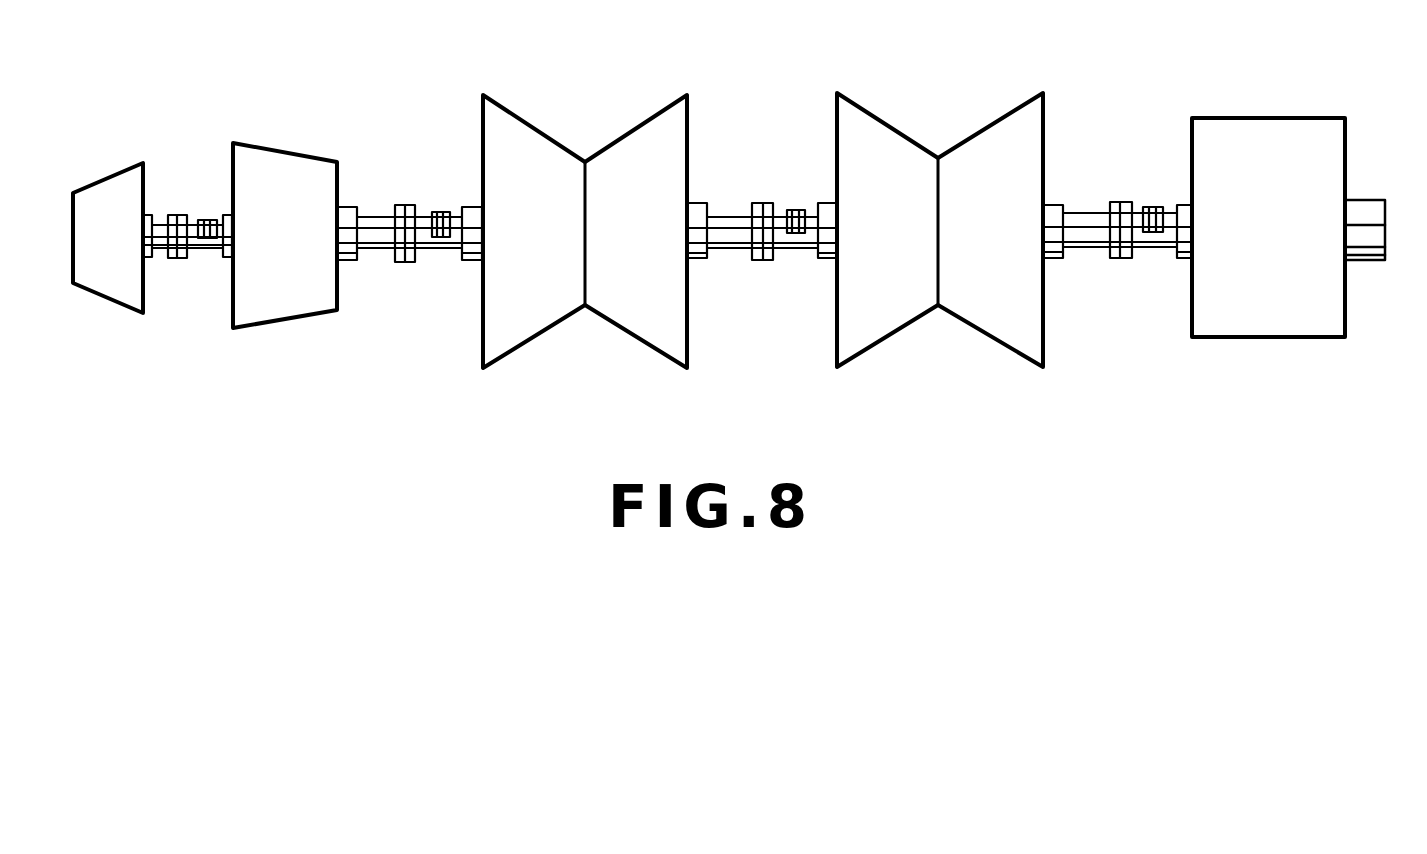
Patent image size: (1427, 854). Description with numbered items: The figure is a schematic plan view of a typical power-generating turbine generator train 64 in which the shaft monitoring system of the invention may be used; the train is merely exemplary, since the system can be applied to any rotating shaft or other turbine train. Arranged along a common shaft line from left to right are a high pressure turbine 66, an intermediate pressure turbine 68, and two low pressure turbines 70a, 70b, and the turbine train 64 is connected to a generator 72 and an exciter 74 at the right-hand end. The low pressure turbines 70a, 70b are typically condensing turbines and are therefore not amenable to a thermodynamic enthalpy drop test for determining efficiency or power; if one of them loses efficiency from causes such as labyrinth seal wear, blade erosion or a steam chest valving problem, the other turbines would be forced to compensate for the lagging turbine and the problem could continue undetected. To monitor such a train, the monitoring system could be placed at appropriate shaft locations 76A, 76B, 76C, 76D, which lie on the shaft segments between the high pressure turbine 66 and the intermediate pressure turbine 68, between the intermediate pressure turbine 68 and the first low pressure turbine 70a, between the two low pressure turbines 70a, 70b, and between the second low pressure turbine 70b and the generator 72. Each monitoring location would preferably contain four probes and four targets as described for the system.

The turbine generator train 64 is at (397, 100).
The high pressure turbine 66 is at (120, 172).
The intermediate pressure turbine 68 is at (277, 162).
The low pressure turbine 70a is at (628, 145).
The low pressure turbine 70b is at (992, 145).
The generator 72 is at (1248, 137).
The exciter 74 is at (1372, 212).
The shaft location 76A is at (195, 220).
The shaft location 76B is at (415, 203).
The shaft location 76C is at (732, 213).
The shaft location 76D is at (1078, 208).